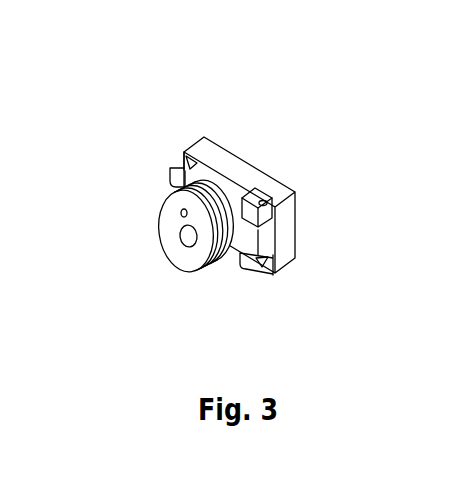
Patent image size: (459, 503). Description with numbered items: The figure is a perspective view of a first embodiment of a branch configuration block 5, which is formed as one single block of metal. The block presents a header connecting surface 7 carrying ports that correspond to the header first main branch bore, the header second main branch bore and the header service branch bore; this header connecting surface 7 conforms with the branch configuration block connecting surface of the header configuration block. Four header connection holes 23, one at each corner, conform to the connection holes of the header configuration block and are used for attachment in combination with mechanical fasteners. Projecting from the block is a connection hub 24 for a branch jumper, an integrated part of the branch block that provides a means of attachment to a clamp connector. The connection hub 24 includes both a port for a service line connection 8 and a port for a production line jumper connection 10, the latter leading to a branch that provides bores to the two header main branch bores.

The branch configuration block 5 is at (199, 148).
The header connecting surface 7 is at (240, 153).
The port for a service line connection 8 is at (181, 211).
The port for a production line jumper connection 10 is at (186, 235).
The header connection hole 23 is at (262, 204).
The connection hub 24 is at (198, 259).